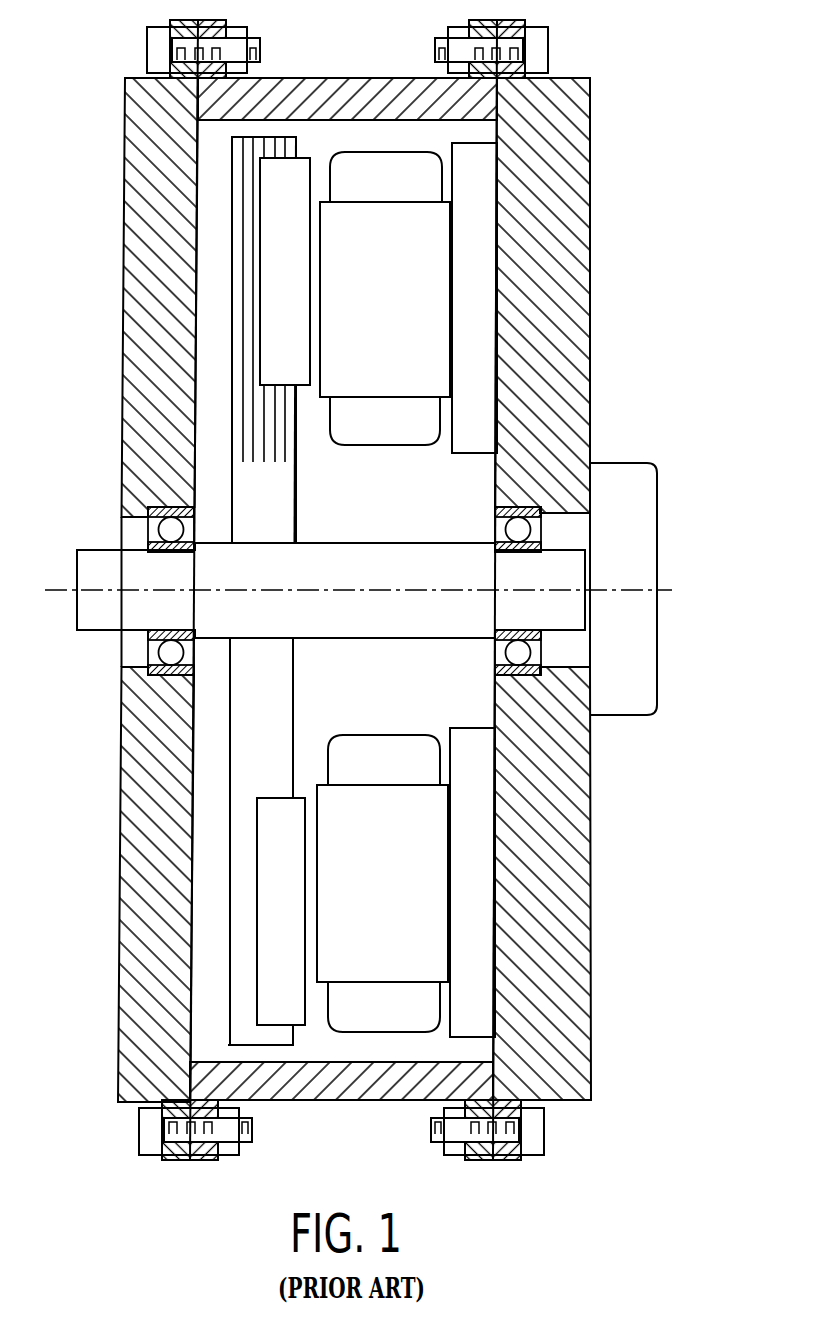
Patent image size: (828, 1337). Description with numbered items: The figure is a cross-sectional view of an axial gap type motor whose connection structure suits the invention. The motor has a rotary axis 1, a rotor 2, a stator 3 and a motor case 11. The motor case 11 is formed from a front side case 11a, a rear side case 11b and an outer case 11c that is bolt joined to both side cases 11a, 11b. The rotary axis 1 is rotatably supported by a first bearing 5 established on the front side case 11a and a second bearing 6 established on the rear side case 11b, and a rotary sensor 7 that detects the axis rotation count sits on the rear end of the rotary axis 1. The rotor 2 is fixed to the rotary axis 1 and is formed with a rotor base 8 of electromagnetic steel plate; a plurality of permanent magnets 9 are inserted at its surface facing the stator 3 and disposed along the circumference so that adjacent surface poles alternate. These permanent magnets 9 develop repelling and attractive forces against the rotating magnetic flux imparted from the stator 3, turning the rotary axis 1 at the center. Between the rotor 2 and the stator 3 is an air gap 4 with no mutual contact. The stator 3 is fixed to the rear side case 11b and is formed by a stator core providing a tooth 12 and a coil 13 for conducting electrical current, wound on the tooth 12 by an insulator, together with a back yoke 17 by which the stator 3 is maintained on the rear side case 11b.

The rotary axis 1 is at (95, 562).
The rotor 2 is at (222, 403).
The stator 3 is at (510, 868).
The gap 4 is at (316, 350).
The first bearing 5 is at (165, 652).
The second bearing 6 is at (518, 651).
The rotary sensor 7 is at (630, 498).
The rotor base 8 is at (245, 282).
The permanent magnets 9 is at (267, 907).
The motor case 11 is at (603, 427).
The front side case 11a is at (130, 1051).
The rear side case 11b is at (555, 1051).
The outer case 11c is at (352, 94).
The tooth 12 is at (430, 292).
The coil 13 is at (424, 180).
The back yoke 17 is at (472, 378).